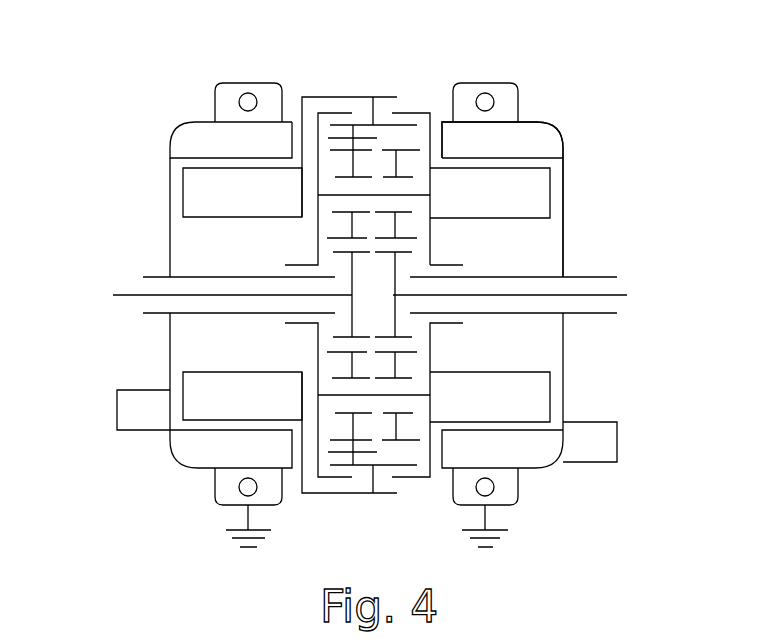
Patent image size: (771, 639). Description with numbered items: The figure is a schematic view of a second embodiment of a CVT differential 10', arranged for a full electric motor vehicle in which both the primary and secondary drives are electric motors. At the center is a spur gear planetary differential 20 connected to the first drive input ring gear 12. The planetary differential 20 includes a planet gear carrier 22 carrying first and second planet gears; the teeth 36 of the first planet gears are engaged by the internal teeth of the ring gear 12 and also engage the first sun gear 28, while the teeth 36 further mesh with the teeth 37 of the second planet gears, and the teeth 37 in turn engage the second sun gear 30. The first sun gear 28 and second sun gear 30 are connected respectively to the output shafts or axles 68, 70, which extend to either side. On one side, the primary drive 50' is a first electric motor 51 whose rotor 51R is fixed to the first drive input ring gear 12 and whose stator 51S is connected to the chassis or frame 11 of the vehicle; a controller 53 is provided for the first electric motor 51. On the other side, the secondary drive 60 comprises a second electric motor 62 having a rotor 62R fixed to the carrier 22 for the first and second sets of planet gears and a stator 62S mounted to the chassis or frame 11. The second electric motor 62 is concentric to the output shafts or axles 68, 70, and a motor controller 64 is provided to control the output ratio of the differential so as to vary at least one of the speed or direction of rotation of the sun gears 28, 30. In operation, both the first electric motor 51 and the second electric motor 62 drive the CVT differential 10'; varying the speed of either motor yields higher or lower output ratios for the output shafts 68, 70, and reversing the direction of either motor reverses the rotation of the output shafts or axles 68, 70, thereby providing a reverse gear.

The CVT differential 10' is at (567, 174).
The planetary differential 20 is at (441, 89).
The first drive input ring gear 12 is at (358, 124).
The teeth of second planet gears 37 is at (337, 152).
The teeth of first planet gears 36 is at (408, 152).
The first sun gear 28 is at (350, 268).
The second sun gear 30 is at (393, 325).
The planet gear carrier 22 is at (430, 240).
The output shaft 68 is at (125, 295).
The output shaft 70 is at (627, 295).
The stator 51S is at (183, 132).
The rotor 51R is at (193, 192).
The first electric motor 51 is at (170, 350).
The controller 53 is at (127, 410).
The primary drive 50' is at (192, 438).
The chassis or frame 11 is at (227, 530).
The stator 62S is at (533, 137).
The rotor 62R is at (540, 195).
The second electric motor 62 is at (567, 240).
The secondary drive 60 is at (565, 372).
The motor controller 64 is at (617, 440).